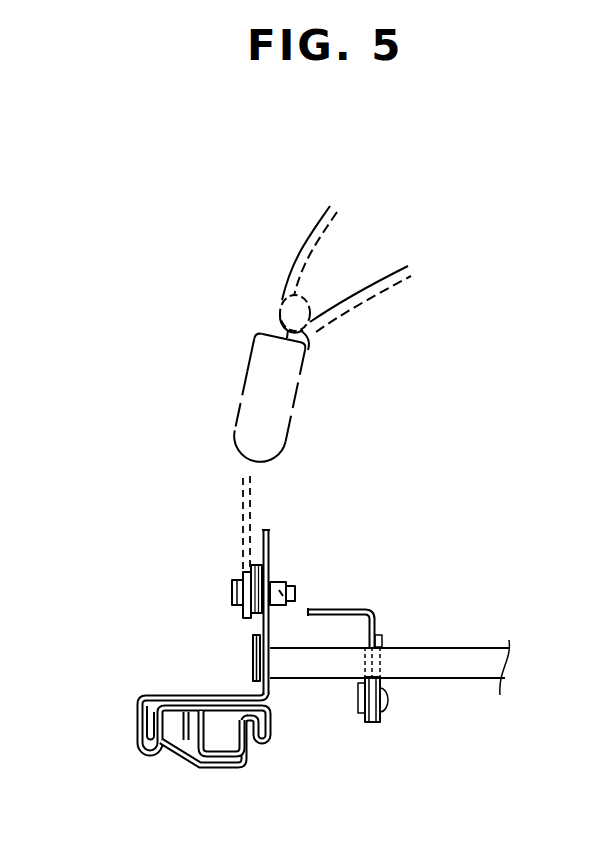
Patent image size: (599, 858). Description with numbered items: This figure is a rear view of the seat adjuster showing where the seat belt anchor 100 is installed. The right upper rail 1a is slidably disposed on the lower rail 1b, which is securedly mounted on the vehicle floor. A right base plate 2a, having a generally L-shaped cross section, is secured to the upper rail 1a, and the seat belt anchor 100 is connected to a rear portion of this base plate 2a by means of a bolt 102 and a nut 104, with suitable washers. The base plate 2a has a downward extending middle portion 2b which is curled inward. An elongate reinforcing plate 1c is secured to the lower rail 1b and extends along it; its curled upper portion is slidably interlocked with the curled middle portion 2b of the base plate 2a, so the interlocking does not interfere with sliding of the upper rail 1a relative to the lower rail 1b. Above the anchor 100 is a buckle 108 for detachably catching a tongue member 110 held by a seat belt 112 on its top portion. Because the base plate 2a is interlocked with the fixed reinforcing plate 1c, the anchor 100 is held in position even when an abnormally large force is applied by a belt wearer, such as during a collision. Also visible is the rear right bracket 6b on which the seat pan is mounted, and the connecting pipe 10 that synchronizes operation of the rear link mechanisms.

The right upper rail 1a is at (270, 732).
The lower rail 1b is at (240, 757).
The reinforcing plate 1c is at (174, 768).
The right base plate 2a is at (240, 537).
The middle portion 2b is at (133, 722).
The bracket 6b is at (364, 607).
The connecting pipe 10 is at (446, 665).
The seat belt anchor 100 is at (282, 359).
The bolt 102 is at (232, 588).
The nut 104 is at (273, 575).
The buckle 108 is at (252, 375).
The tongue member 110 is at (292, 322).
The seat belt 112 is at (290, 262).